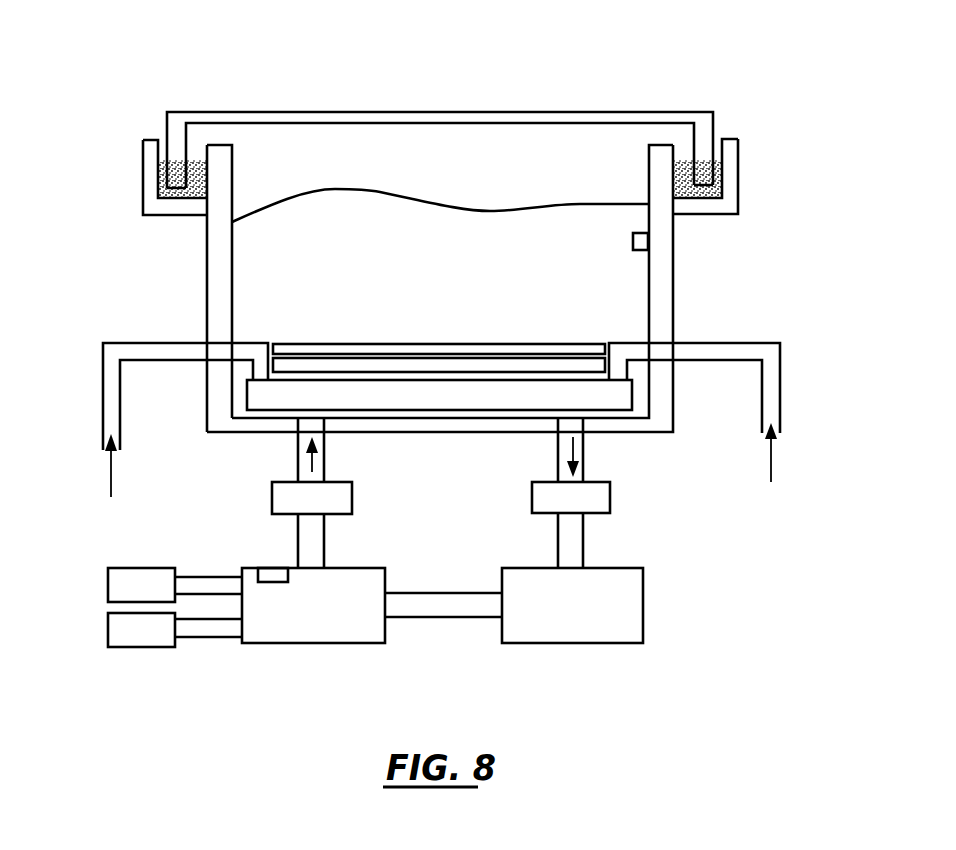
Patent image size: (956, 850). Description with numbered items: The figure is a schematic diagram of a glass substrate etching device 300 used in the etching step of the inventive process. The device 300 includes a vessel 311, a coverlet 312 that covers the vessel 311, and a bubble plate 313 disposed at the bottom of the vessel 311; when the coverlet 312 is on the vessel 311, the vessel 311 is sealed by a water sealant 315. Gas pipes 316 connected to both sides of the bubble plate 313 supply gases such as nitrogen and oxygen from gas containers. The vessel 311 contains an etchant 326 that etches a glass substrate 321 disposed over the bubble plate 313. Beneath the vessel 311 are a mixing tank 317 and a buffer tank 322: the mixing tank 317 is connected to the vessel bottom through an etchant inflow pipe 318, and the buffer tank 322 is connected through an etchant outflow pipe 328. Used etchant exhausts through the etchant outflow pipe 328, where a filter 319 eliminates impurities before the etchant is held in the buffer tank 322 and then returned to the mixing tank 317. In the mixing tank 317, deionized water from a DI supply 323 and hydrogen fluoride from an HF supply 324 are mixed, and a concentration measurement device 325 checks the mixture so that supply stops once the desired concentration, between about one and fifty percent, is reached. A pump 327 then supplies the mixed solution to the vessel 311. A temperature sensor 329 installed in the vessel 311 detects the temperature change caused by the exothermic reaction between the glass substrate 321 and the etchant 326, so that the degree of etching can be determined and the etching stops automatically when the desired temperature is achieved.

The glass substrate etching device 300 is at (120, 105).
The vessel 311 is at (667, 298).
The coverlet 312 is at (707, 128).
The bubble plate 313 is at (263, 396).
The water sealant 315 is at (722, 190).
The gas pipes 316 is at (108, 426).
The mixing tank 317 is at (327, 638).
The etchant inflow pipe 318 is at (320, 458).
The filter 319 is at (598, 499).
The glass substrate 321 is at (300, 350).
The buffer tank 322 is at (635, 613).
The DI supply 323 is at (106, 586).
The HF supply 324 is at (106, 634).
The concentration measurement device 325 is at (270, 575).
The etchant 326 is at (243, 272).
The pump 327 is at (340, 502).
The etchant outflow pipe 328 is at (556, 445).
The temperature sensor 329 is at (641, 243).